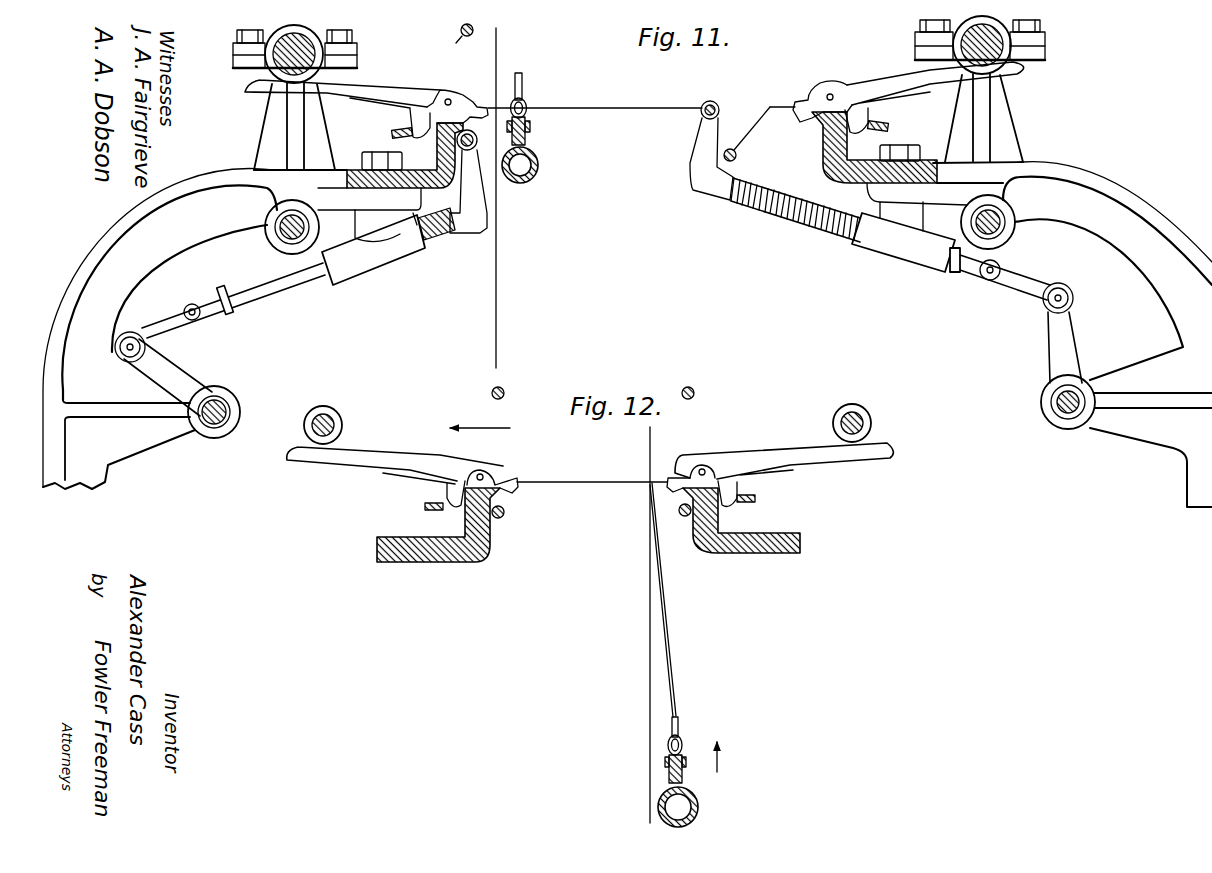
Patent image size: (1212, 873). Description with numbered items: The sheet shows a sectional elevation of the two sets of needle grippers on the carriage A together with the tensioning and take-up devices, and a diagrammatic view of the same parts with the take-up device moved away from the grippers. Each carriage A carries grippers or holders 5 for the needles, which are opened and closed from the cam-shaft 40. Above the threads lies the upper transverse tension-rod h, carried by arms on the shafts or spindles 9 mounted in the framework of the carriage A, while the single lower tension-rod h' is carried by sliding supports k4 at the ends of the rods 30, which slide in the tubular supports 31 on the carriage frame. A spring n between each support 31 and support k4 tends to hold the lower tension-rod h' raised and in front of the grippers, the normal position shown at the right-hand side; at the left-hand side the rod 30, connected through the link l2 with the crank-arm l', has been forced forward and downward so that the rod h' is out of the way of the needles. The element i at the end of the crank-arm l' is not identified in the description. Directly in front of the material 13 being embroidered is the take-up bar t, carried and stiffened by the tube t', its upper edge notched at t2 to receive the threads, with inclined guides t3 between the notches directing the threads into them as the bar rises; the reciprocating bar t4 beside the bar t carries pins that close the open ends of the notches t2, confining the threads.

In FIG. 11, the carriage A is at (627, 334).
In FIG. 11, the cam-shaft 40 is at (315, 58).
In FIG. 12, the cam-shaft 40 is at (342, 430).
In FIG. 11, the needle holders or grippers 5 is at (452, 99).
In FIG. 12, the needle holders or grippers 5 is at (483, 474).
In FIG. 11, the upper transverse tension-rod h is at (605, 92).
In FIG. 12, the upper transverse tension-rod h is at (601, 389).
In FIG. 11, the lower tension-rod h' is at (593, 114).
In FIG. 12, the lower tension-rod h' is at (591, 523).
In FIG. 11, the material 13 is at (641, 198).
In FIG. 12, the material 13 is at (648, 675).
In FIG. 11, the inclined guide t3 is at (524, 80).
In FIG. 12, the inclined guide t3 is at (680, 726).
In FIG. 11, the take-up bar t is at (529, 130).
In FIG. 12, the take-up bar t is at (699, 776).
In FIG. 11, the reciprocating bar t4 is at (530, 140).
In FIG. 12, the reciprocating bar t4 is at (667, 776).
In FIG. 11, the tube t' is at (326, 281).
In FIG. 12, the tube t' is at (653, 807).
In FIG. 11, the sliding support k4 is at (493, 222).
In FIG. 11, the spring n is at (435, 232).
In FIG. 11, the shaft or spindle 9 is at (300, 218).
In FIG. 11, the tubular support 31 is at (368, 260).
In FIG. 11, the rod 30 is at (267, 288).
In FIG. 11, the notch t2 is at (173, 325).
In FIG. 11, the link l2 is at (1020, 288).
In FIG. 11, the crank-arm l' is at (1073, 333).
In FIG. 11, the hub i is at (228, 404).